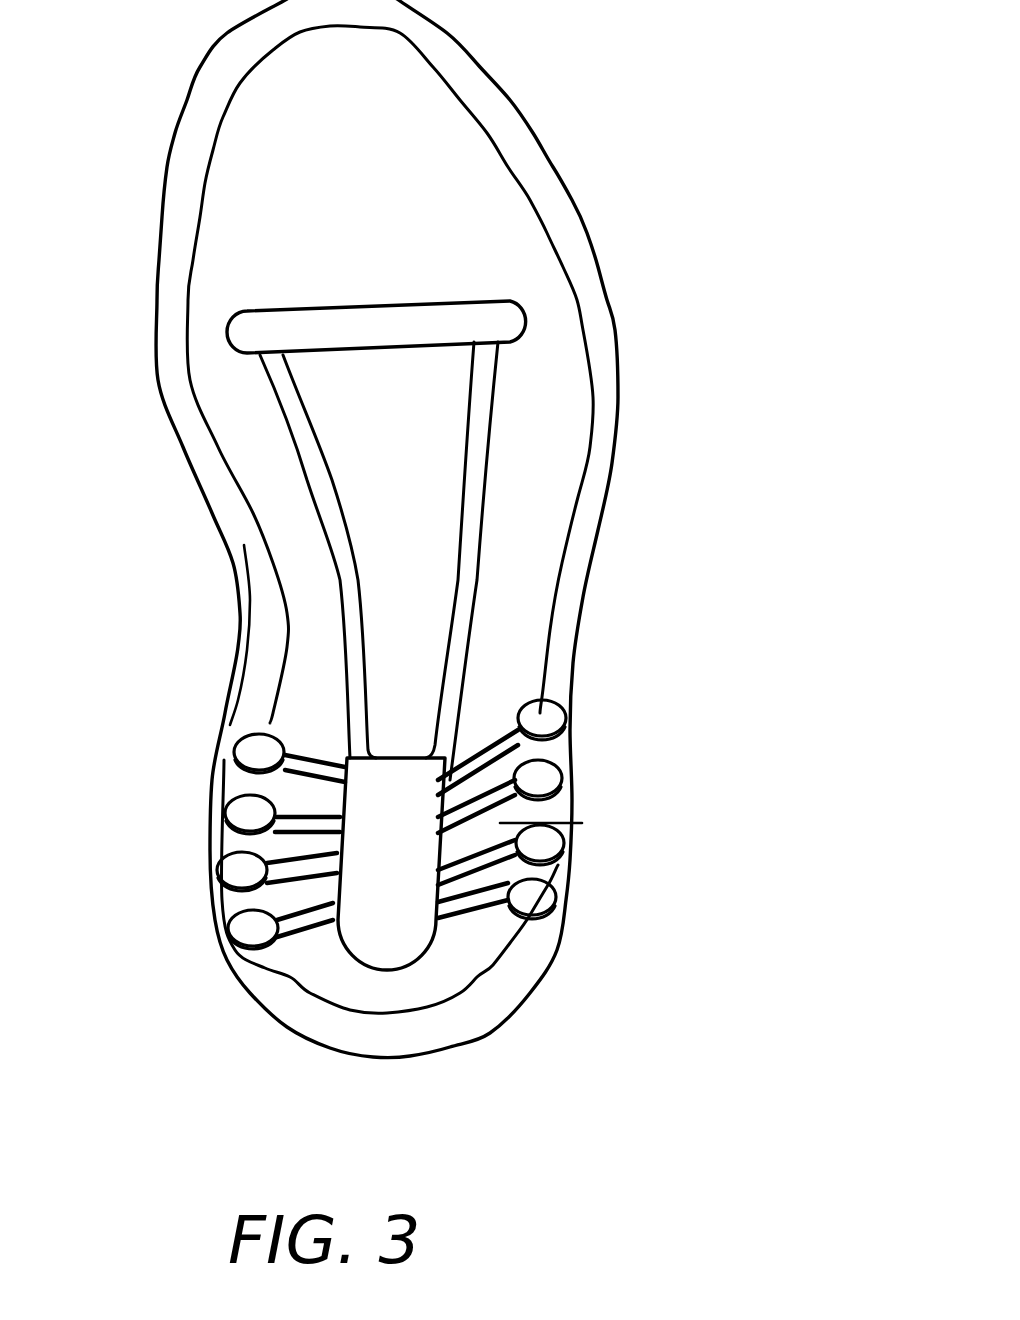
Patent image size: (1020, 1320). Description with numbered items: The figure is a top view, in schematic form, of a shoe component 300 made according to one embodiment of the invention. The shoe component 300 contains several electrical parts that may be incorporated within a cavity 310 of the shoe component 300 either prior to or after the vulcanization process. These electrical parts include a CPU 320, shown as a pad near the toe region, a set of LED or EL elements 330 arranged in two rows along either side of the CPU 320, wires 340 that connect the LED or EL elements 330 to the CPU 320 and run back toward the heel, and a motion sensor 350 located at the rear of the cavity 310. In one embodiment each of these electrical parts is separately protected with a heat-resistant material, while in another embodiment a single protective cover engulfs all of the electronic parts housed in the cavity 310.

The shoe component 300 is at (614, 249).
The cavity 310 is at (562, 478).
The CPU 320 is at (391, 795).
The LED or EL 330 is at (245, 760).
The wires 340 is at (343, 587).
The motion sensor 350 is at (250, 313).